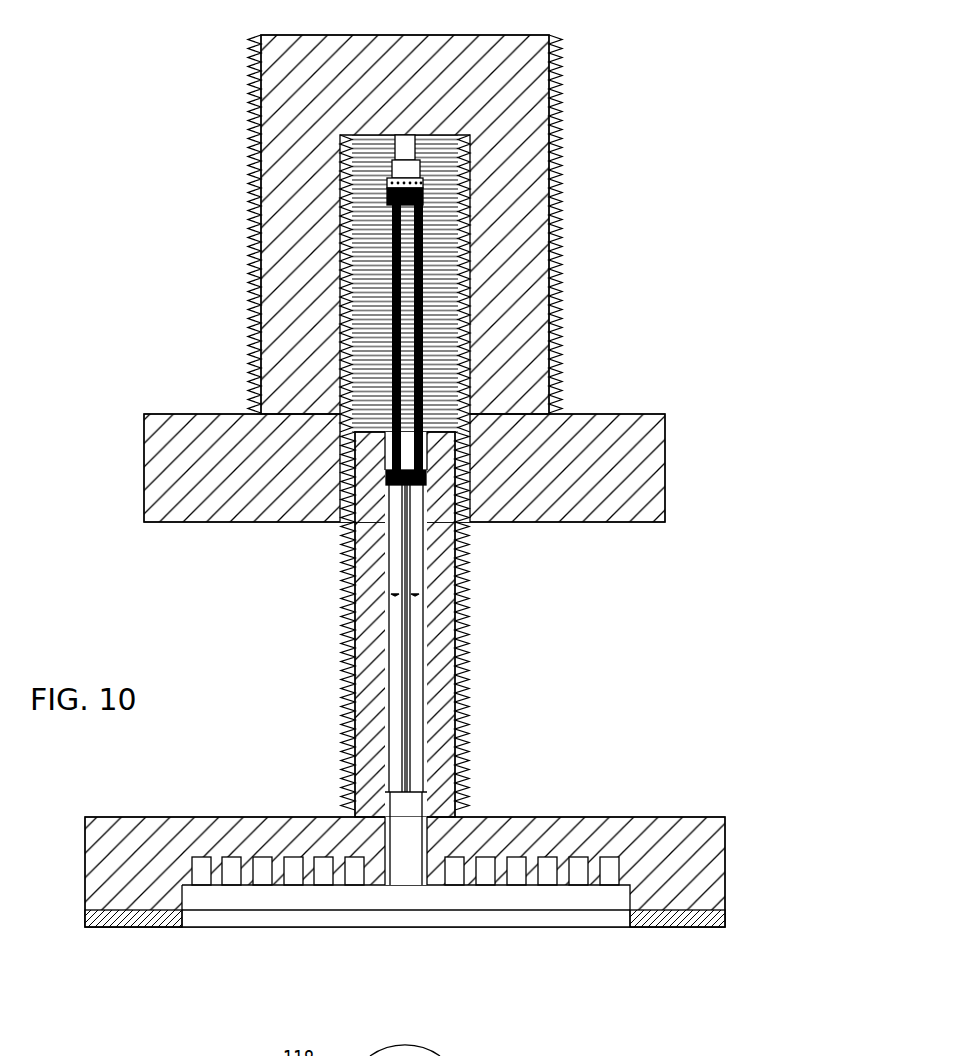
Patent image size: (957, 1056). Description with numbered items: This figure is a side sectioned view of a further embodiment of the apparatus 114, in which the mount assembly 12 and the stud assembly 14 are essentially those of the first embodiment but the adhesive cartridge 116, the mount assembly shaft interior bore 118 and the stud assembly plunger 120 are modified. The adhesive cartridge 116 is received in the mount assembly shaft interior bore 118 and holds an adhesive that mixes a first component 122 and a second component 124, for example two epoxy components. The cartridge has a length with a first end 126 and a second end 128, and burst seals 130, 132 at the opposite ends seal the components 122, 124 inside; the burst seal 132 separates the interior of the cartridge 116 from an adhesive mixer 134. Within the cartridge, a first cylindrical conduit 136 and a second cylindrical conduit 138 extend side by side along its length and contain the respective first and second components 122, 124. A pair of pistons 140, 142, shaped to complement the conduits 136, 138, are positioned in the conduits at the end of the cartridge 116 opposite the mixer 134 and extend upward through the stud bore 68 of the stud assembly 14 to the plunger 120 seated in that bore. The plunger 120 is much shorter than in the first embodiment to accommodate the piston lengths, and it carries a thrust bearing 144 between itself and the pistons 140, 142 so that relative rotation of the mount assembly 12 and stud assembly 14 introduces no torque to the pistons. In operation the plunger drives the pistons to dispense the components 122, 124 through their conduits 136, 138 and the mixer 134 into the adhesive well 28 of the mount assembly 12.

The mount assembly 12 is at (731, 804).
The stud assembly 14 is at (604, 41).
The adhesive well 28 is at (290, 912).
The stud bore 68 is at (370, 240).
The apparatus 114 is at (686, 553).
The adhesive cartridge 116 is at (430, 660).
The mount assembly shaft interior bore 118 is at (382, 652).
The stud assembly plunger 120 is at (398, 152).
The first component 122 is at (393, 703).
The second component 124 is at (413, 702).
The first end 126 is at (427, 487).
The second end 128 is at (435, 800).
The burst seal 130 is at (384, 480).
The burst seal 132 is at (355, 815).
The adhesive mixer 134 is at (395, 831).
The first cylindrical conduit 136 is at (395, 608).
The second cylindrical conduit 138 is at (415, 608).
The piston 140 is at (385, 450).
The piston 142 is at (420, 450).
The thrust bearing 144 is at (390, 183).